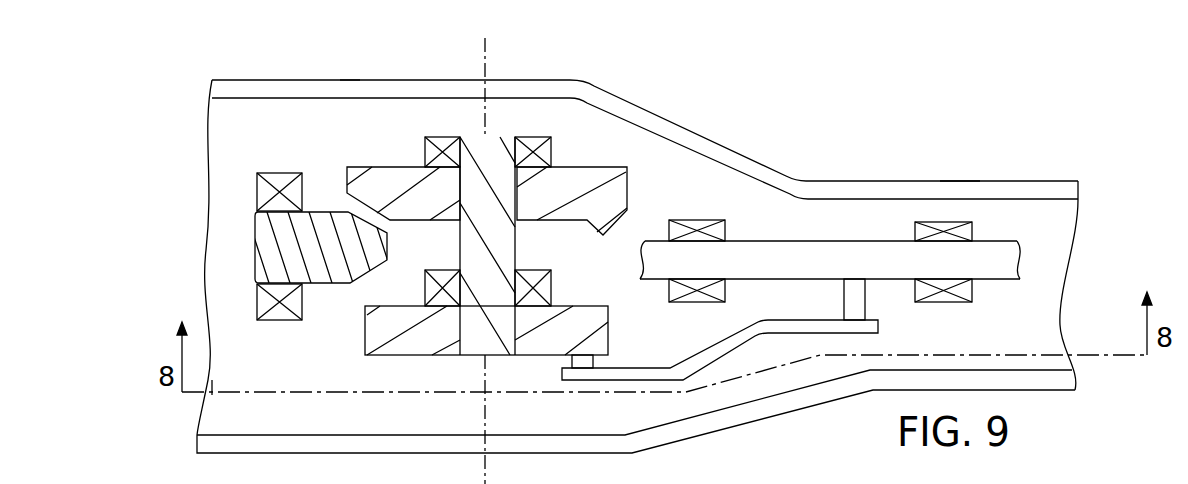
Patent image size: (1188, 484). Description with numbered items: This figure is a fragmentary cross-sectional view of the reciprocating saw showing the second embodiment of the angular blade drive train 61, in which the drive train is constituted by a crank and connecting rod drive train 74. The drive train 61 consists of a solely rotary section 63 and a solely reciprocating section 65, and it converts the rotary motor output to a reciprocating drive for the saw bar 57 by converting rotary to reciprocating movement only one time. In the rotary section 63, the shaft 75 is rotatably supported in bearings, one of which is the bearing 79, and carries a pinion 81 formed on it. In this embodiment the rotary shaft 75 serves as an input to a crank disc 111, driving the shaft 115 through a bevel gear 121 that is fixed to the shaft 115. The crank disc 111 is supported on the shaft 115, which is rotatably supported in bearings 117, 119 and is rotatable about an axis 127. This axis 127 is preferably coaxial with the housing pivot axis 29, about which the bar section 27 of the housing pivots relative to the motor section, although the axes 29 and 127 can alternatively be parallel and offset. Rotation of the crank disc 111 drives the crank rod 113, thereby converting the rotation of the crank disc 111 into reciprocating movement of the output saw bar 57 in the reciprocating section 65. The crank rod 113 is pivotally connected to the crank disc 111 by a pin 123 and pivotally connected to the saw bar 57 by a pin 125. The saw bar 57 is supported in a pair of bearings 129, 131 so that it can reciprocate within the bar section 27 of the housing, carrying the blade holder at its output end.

The angular blade drive train 61 is at (290, 70).
The crank and connecting rod drive train 74 is at (352, 106).
The axis 127 is at (476, 83).
The first axis 29 is at (493, 80).
The bearing 117 is at (553, 150).
The bevel gear 121 is at (622, 176).
The saw bar 57 is at (778, 250).
The reciprocating section 65 is at (845, 230).
The bar section 27 is at (950, 187).
The bearing 79 is at (292, 175).
The bearing 129 is at (688, 220).
The shaft 75 is at (260, 257).
The shaft 115 is at (470, 250).
The bearing 119 is at (552, 291).
The pinion 81 is at (337, 288).
The rotary section 63 is at (354, 358).
The crank disc 111 is at (421, 348).
The pin 123 is at (594, 361).
The pin 125 is at (848, 297).
The bearing 131 is at (950, 302).
The crank rod 113 is at (652, 372).